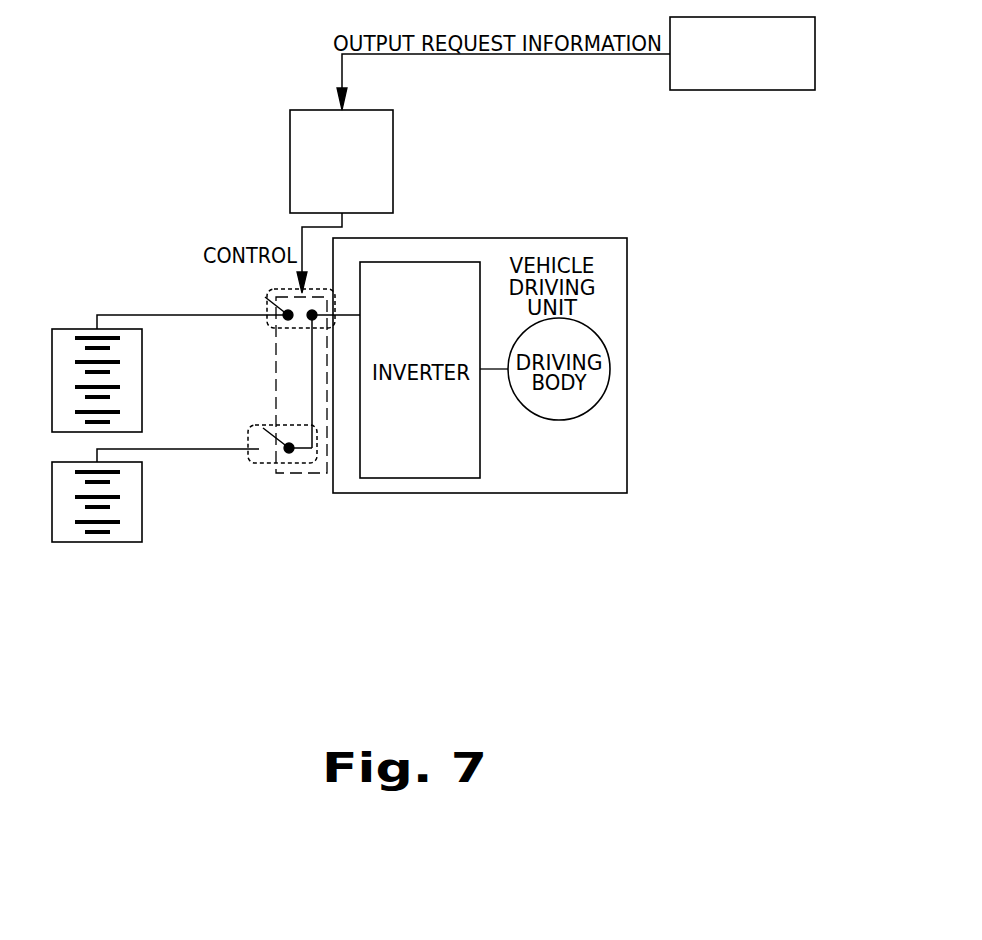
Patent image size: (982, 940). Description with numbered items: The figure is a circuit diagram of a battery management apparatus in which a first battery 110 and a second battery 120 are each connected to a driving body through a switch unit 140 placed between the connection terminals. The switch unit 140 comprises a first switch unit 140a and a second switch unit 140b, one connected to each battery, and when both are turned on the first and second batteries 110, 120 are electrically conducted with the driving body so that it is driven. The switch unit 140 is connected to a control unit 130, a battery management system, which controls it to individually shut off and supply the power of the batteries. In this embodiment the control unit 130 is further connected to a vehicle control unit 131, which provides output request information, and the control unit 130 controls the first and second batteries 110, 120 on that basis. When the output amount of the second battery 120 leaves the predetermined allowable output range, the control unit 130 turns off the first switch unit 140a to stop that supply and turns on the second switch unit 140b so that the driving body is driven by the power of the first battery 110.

The first battery 110 is at (142, 522).
The second battery 120 is at (66, 329).
The control unit 130 is at (393, 135).
The vehicle control unit 131 is at (745, 90).
The switch unit 140 is at (308, 473).
The first switch unit 140a is at (334, 292).
The second switch unit 140b is at (280, 463).